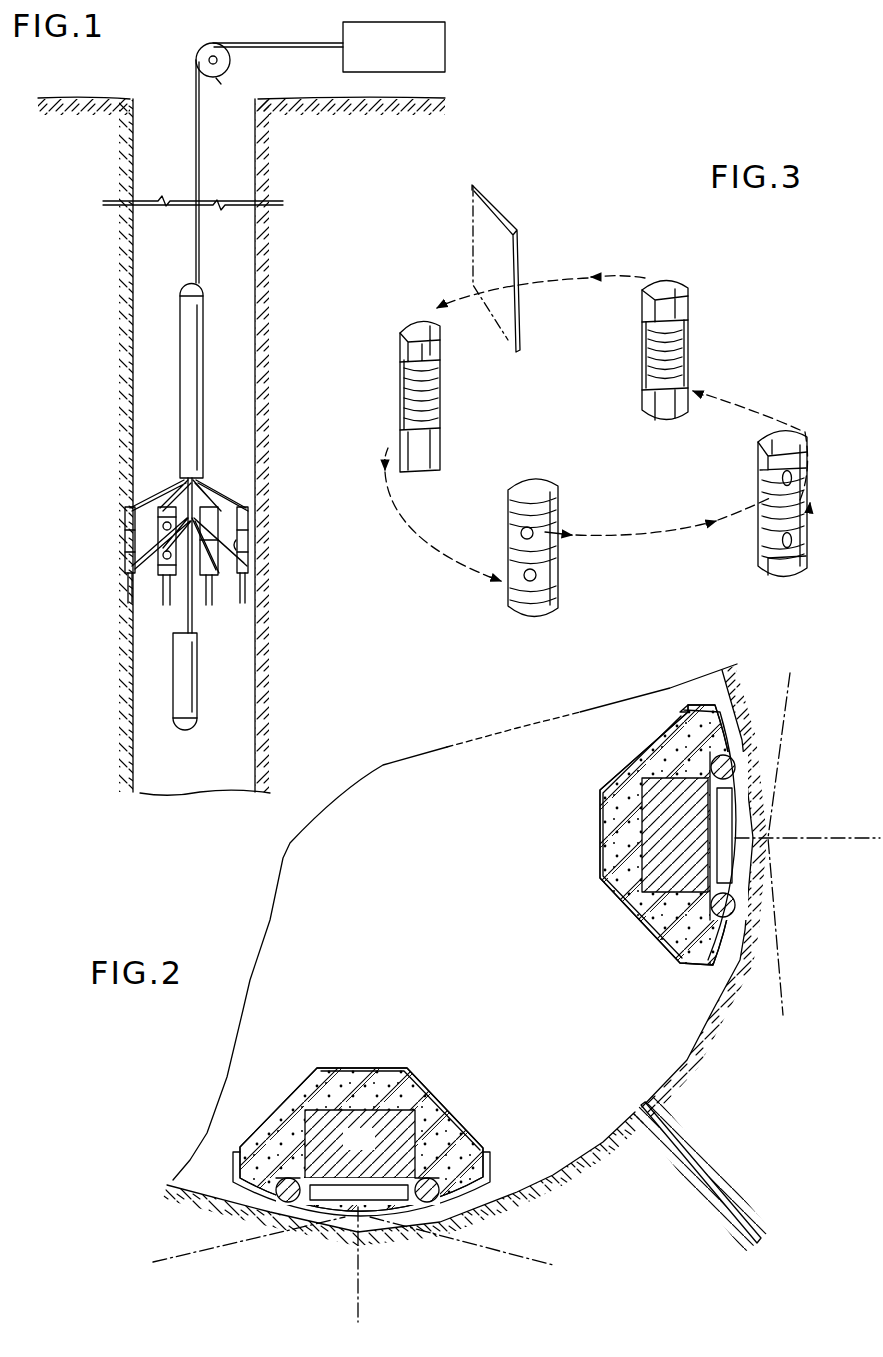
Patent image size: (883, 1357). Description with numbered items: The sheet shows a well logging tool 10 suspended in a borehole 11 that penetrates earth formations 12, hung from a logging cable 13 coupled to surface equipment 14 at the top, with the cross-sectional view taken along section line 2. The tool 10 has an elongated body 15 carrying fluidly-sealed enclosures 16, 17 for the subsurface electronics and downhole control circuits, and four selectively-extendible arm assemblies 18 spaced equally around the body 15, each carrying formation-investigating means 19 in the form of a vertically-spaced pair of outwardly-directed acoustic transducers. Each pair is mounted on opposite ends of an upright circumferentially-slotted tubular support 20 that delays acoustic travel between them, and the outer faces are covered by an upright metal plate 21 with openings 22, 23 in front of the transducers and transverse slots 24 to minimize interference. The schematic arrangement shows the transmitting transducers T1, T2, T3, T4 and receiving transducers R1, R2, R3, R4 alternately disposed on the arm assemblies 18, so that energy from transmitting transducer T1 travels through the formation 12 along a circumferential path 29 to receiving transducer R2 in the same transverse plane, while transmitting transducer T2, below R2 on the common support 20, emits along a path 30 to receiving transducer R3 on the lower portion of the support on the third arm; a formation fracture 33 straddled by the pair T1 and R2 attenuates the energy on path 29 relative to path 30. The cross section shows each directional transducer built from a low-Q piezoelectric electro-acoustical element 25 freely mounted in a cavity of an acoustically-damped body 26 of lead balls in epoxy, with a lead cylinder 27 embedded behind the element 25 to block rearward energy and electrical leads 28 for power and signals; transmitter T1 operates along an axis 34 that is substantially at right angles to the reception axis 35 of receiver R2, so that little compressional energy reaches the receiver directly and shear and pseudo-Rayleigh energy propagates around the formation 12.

In FIG. 1, the section line 2- 2 is at (85, 507).
In FIG. 1, the well logging tool 10 is at (189, 507).
In FIG. 1, the borehole 11 is at (258, 164).
In FIG. 2, the borehole 11 is at (606, 1140).
In FIG. 1, the earth formation 12 is at (110, 662).
In FIG. 2, the earth formation 12 is at (755, 1030).
In FIG. 1, the logging cable 13 is at (194, 152).
In FIG. 1, the surface equipment 14 is at (405, 60).
In FIG. 1, the elongated body 15 is at (193, 619).
In FIG. 1, the fluidly-sealed enclosure 16 is at (193, 330).
In FIG. 1, the fluidly-sealed enclosure 17 is at (198, 690).
In FIG. 1, the extendible arm assembly 18 is at (221, 486).
In FIG. 1, the formation-investigating means 19 is at (158, 591).
In FIG. 1, the tubular support 20 is at (240, 538).
In FIG. 3, the tubular support 20 is at (432, 404).
In FIG. 3, the metal plate 21 is at (535, 553).
In FIG. 2, the metal plate 21 is at (256, 1192).
In FIG. 3, the opening 22 is at (523, 530).
In FIG. 2, the opening 22 is at (386, 1222).
In FIG. 3, the opening 23 is at (526, 578).
In FIG. 3, the transverse slot 24 is at (515, 556).
In FIG. 2, the electro-acoustical element 25 is at (345, 1200).
In FIG. 2, the acoustically-damped body 26 is at (418, 1090).
In FIG. 2, the cylinder 27 is at (371, 1152).
In FIG. 2, the electrical leads 28 is at (290, 1206).
In FIG. 3, the circumferential path 29 is at (556, 275).
In FIG. 3, the acoustic path 30 is at (410, 532).
In FIG. 3, the formation fracture 33 is at (500, 214).
In FIG. 2, the formation fracture 33 is at (702, 1170).
In FIG. 2, the operating axis 34 is at (358, 1305).
In FIG. 2, the reception axis 35 is at (828, 839).
In FIG. 3, the transmitting transducer T1 is at (668, 333).
In FIG. 2, the transmitting transducer T1 is at (353, 1166).
In FIG. 3, the transmitting transducer T2 is at (457, 454).
In FIG. 3, the transmitting transducer T3 is at (575, 478).
In FIG. 3, the transmitting transducer T4 is at (782, 522).
In FIG. 3, the receiving transducer R1 is at (663, 442).
In FIG. 3, the receiving transducer R2 is at (461, 348).
In FIG. 2, the receiving transducer R2 is at (620, 926).
In FIG. 3, the receiving transducer R3 is at (579, 602).
In FIG. 3, the receiving transducer R4 is at (805, 412).